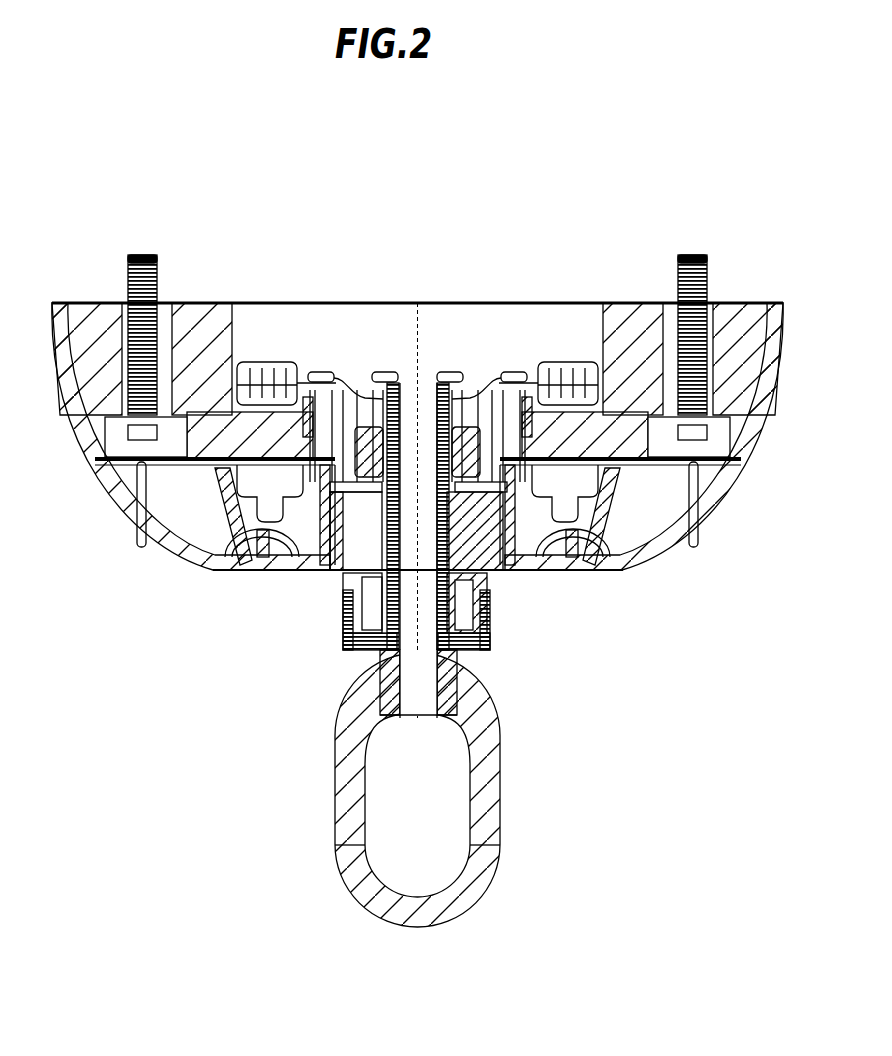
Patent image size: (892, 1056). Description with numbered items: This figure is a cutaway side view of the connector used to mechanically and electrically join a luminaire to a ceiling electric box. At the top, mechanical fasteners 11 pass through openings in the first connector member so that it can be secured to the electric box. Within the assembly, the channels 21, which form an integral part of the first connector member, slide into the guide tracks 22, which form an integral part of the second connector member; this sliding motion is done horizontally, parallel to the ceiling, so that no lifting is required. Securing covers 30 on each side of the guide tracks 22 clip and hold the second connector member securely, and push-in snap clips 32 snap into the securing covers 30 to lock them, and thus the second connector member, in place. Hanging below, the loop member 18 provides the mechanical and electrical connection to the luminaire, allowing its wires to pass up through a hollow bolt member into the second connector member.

The mechanical fasteners 11 is at (160, 268).
The channels 21 is at (530, 380).
The guide tracks 22 is at (623, 563).
The push-in snap clips 32 is at (165, 520).
The securing covers 30 is at (553, 563).
The loop member 18 is at (493, 783).